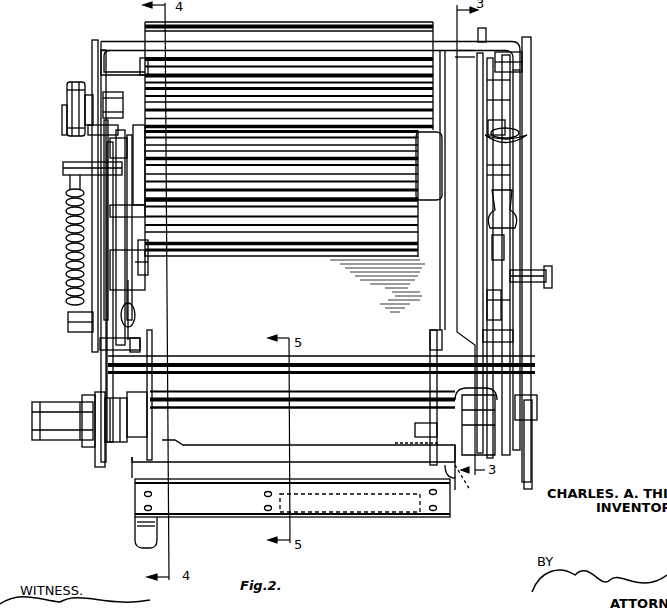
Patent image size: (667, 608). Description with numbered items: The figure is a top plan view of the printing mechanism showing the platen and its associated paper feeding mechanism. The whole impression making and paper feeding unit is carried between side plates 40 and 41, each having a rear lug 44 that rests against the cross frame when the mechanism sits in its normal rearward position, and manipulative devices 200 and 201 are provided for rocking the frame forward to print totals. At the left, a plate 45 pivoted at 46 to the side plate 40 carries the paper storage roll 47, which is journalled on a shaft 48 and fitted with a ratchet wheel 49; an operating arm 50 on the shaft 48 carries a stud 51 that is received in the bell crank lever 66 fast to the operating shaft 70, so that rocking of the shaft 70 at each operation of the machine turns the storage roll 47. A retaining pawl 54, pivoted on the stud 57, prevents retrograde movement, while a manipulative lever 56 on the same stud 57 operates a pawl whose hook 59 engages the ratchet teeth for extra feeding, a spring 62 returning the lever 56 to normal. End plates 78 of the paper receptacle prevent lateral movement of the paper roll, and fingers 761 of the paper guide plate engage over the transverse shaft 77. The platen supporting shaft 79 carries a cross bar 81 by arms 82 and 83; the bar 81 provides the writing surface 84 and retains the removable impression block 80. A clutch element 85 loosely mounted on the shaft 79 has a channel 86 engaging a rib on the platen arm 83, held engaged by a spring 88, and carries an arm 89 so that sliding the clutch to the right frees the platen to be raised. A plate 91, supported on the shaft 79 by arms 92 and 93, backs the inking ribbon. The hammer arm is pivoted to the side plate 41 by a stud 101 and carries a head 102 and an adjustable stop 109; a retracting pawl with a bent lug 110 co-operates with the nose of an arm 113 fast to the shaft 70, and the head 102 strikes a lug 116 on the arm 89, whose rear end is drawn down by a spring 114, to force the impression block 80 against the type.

The side plate 40 is at (97, 340).
The side plate 41 is at (520, 314).
The lug 44 is at (524, 44).
The plate 45 is at (108, 298).
The pivot 46 is at (36, 436).
The storage roll 47 is at (281, 193).
The shaft 48 is at (110, 142).
The ratchet wheel 49 is at (140, 168).
The operating arm 50 is at (118, 150).
The stud 51 is at (70, 168).
The retaining pawl 54 is at (138, 234).
The manipulative lever 56 is at (150, 252).
The stud 57 is at (145, 264).
The hook 59 is at (148, 106).
The spring 62 is at (136, 318).
The bell crank lever 66 is at (66, 123).
The operating shaft 70 is at (115, 106).
The transverse shaft 77 is at (321, 347).
The end plate 78 is at (147, 67).
The platen supporting shaft 79 is at (320, 408).
The removable impression block 80 is at (313, 514).
The cross bar 81 is at (157, 526).
The arm 82 is at (137, 433).
The platen arm 83 is at (424, 423).
The writing surface 84 is at (292, 498).
The clutch element 85 is at (463, 410).
The channel 86 is at (474, 484).
The spring 88 is at (508, 398).
The arm 89 is at (506, 337).
The plate 91 is at (268, 453).
The arm 92 is at (140, 445).
The arm 93 is at (420, 446).
The stud 101 is at (505, 90).
The head 102 is at (512, 318).
The adjustable stop 109 is at (502, 128).
The lug 110 is at (473, 186).
The arm 113 is at (484, 29).
The spring 114 is at (552, 280).
The lug 116 is at (500, 250).
The manipulative device 200 is at (527, 138).
The manipulative device 201 is at (505, 212).
The fingers 761 is at (142, 345).